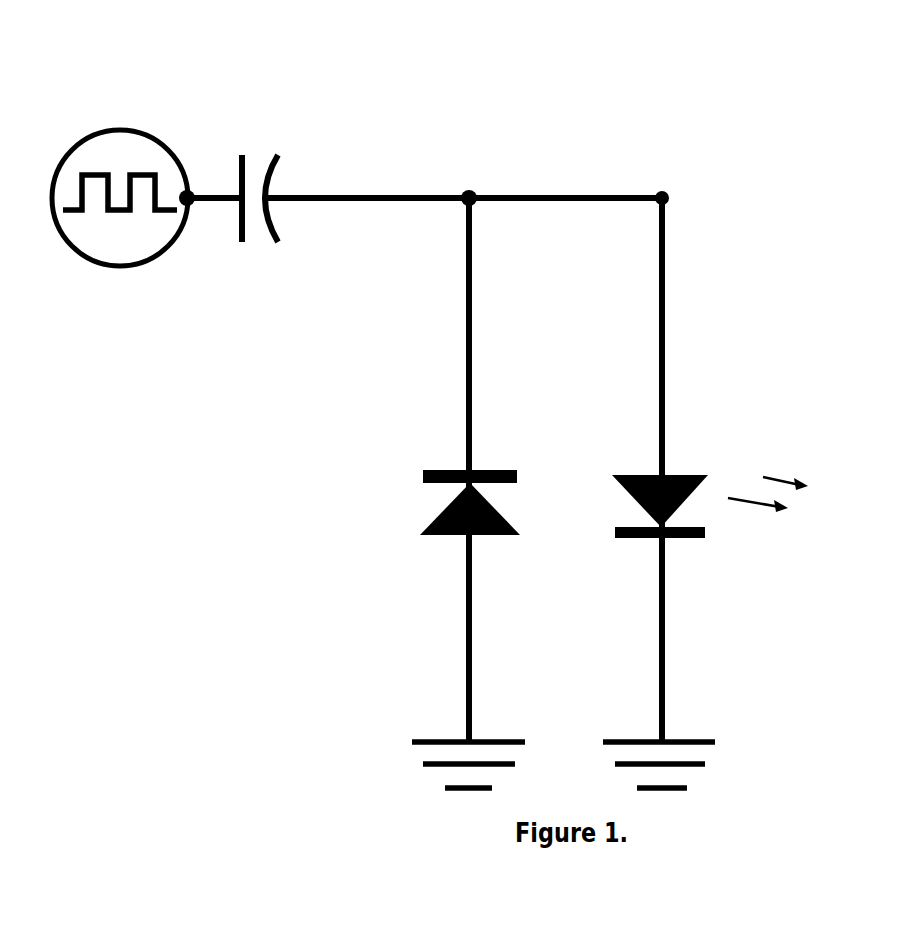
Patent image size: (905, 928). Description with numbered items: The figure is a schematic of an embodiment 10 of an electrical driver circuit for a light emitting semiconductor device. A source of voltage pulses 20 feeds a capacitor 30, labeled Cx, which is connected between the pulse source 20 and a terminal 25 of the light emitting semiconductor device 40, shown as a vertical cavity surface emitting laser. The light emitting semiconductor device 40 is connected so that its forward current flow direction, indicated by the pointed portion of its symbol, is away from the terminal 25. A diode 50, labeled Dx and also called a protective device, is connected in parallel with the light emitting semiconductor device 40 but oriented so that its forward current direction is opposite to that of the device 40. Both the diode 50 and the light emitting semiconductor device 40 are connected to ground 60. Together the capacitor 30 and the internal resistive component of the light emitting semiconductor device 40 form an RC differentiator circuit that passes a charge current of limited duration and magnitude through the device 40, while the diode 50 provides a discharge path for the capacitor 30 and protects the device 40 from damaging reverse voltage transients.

The embodiment of the driver circuit 10 is at (142, 505).
The source of voltage pulses 20 is at (123, 115).
The terminal 25 is at (467, 167).
The capacitor 30 is at (285, 132).
The light emitting semiconductor device 40 is at (700, 452).
The diode 50 is at (433, 452).
The ground 60 is at (413, 788).